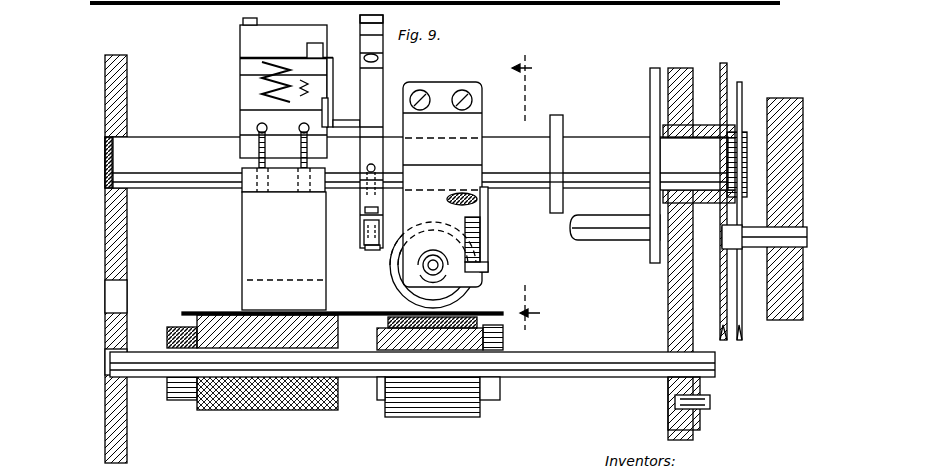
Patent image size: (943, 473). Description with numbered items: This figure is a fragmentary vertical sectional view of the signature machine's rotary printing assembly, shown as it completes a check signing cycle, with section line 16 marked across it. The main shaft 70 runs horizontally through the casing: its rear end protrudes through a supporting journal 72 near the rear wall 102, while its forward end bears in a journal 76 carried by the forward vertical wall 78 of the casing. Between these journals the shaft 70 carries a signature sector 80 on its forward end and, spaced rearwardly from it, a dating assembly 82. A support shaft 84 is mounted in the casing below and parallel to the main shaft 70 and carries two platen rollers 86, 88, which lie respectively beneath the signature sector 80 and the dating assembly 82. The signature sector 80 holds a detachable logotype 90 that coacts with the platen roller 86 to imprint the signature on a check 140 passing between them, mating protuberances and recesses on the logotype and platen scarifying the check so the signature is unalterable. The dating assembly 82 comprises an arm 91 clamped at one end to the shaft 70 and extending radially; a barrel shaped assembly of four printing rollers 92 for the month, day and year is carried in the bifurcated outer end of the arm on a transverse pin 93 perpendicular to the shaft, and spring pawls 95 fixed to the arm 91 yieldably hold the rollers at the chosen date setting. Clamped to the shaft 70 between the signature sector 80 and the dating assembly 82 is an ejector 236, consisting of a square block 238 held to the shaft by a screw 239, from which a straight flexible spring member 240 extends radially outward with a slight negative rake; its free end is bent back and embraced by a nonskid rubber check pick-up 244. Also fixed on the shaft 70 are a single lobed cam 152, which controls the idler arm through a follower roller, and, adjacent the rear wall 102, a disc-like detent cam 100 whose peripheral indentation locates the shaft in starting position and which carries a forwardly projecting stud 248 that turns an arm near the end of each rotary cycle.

The section line 16 is at (530, 194).
The main shaft 70 is at (205, 145).
The supporting journal 72 is at (668, 138).
The journal 76 is at (110, 180).
The forward vertical wall 78 is at (115, 120).
The signature sector 80 is at (242, 215).
The dating assembly 82 is at (442, 82).
The support shaft 84 is at (620, 352).
The platen roller 86 is at (275, 412).
The platen roller 88 is at (480, 418).
The logotype 90 is at (255, 310).
The arm 91 is at (470, 207).
The printing rollers 92 is at (470, 290).
The transverse pin 93 is at (433, 258).
The spring pawls 95 is at (488, 238).
The cam 100 is at (650, 85).
The rear wall 102 is at (683, 75).
The check 140 is at (481, 317).
The single lobed cam 152 is at (556, 125).
The ejector 236 is at (372, 245).
The square block 238 is at (368, 199).
The screw 239 is at (368, 210).
The spring member 240 is at (378, 97).
The check pick-up 244 is at (362, 20).
The stud 248 is at (598, 240).